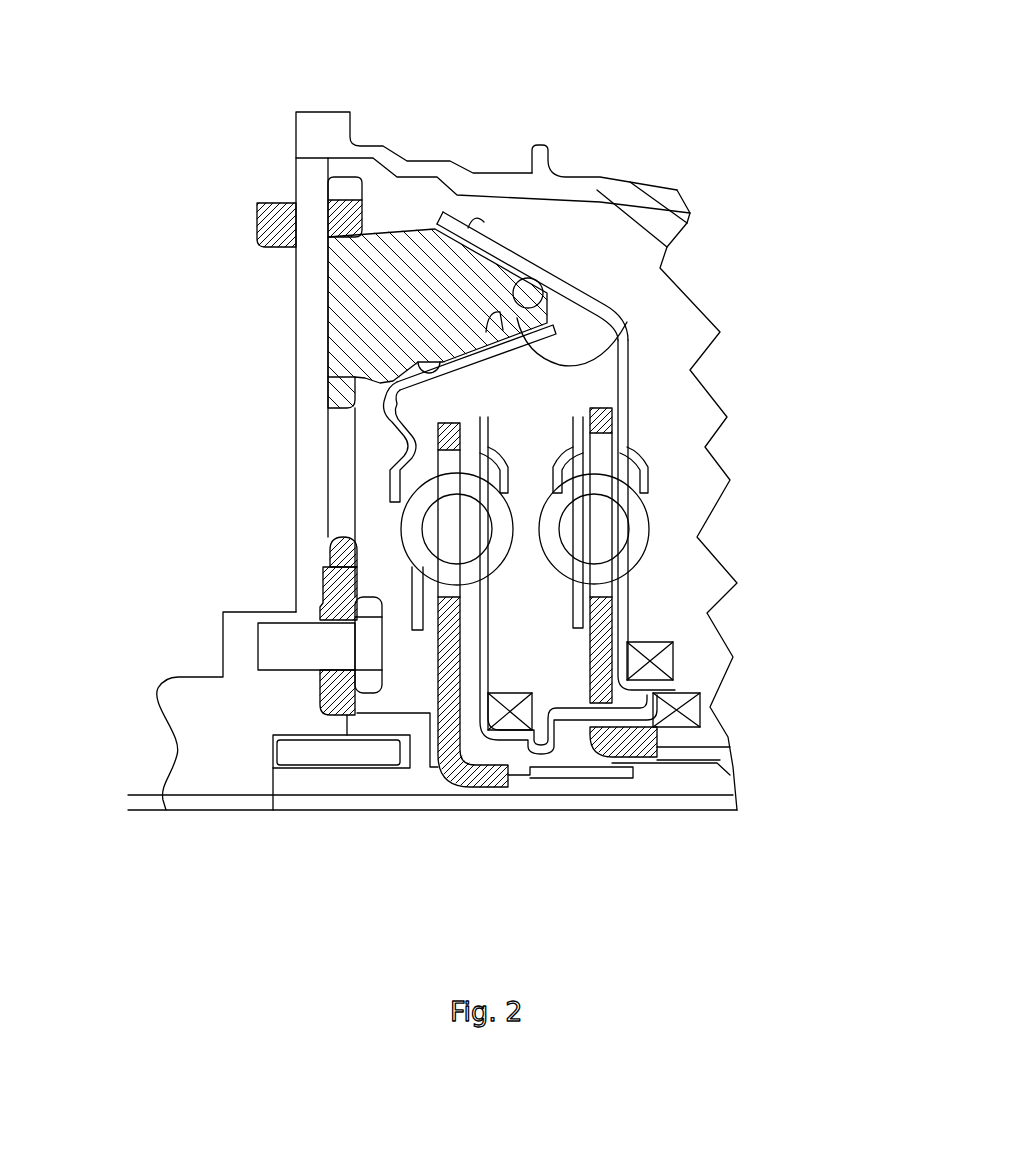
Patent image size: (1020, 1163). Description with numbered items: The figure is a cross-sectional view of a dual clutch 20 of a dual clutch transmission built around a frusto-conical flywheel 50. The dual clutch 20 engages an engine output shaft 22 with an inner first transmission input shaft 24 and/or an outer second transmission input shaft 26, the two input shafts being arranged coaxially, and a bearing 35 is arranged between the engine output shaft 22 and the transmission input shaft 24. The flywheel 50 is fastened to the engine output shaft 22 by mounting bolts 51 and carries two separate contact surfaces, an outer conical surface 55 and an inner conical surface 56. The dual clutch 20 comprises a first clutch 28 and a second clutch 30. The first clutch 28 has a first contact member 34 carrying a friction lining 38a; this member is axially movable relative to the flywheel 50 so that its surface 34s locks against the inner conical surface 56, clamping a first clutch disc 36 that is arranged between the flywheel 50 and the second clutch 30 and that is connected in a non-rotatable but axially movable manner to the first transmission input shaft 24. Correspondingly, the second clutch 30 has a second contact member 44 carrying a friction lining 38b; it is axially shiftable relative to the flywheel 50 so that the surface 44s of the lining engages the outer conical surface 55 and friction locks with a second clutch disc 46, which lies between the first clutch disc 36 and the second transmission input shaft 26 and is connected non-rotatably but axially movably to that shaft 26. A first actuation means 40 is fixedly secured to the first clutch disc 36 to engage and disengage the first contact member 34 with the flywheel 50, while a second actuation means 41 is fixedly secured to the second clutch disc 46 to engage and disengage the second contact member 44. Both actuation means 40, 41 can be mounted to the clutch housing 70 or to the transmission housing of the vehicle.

The dual clutch 20 is at (755, 60).
The engine output shaft 22 is at (150, 695).
The first transmission input shaft 24 is at (720, 780).
The second transmission input shaft 26 is at (718, 747).
The first clutch 28 is at (372, 483).
The second clutch 30 is at (647, 435).
The first contact member 34 is at (384, 421).
The surface 34s is at (618, 362).
The bearing 35 is at (338, 748).
The first clutch disc 36 is at (452, 620).
The friction lining 38a is at (452, 362).
The friction lining 38b is at (494, 250).
The first actuation means 40 is at (698, 707).
The second actuation means 41 is at (668, 657).
The second contact member 44 is at (610, 310).
The surface 44s is at (612, 312).
The second clutch disc 46 is at (602, 622).
The flywheel 50 is at (386, 247).
The mounting bolts 51 is at (305, 647).
The outer conical surface 55 is at (470, 248).
The inner conical surface 56 is at (432, 374).
The clutch housing 70 is at (328, 112).